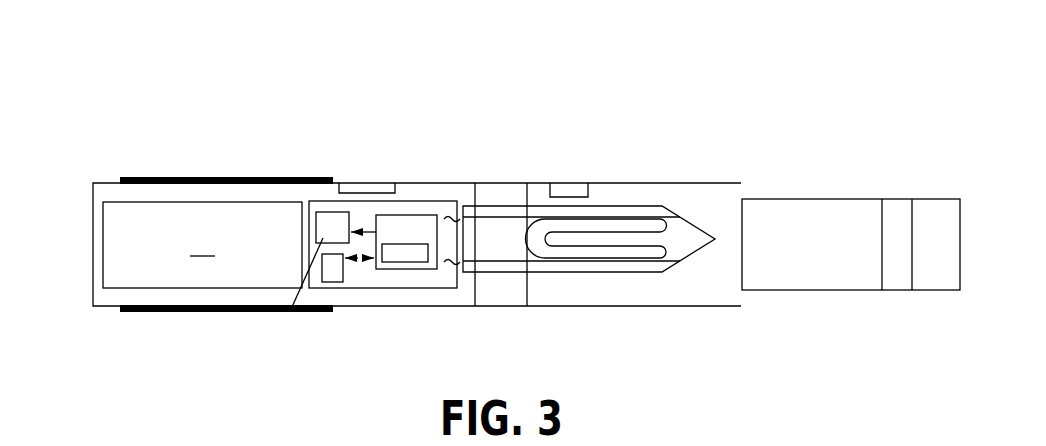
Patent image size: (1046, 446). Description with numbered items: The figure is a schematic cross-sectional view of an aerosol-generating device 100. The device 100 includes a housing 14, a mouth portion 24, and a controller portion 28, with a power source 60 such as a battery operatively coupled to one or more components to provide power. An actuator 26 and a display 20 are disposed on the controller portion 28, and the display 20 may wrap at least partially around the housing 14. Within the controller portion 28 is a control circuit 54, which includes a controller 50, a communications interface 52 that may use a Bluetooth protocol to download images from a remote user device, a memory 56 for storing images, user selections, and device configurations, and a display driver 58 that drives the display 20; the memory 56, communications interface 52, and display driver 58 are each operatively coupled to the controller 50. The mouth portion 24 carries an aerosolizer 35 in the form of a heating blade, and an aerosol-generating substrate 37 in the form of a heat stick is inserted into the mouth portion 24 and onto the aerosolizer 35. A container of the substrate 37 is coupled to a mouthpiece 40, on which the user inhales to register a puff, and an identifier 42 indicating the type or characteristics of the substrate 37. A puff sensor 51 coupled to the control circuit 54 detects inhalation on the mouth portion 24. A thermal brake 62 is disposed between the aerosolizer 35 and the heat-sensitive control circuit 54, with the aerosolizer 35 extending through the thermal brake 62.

The aerosol-generating device 100 is at (262, 86).
The housing 14 is at (107, 181).
The display 20 is at (195, 180).
The controller portion 28 is at (106, 309).
The power source 60 is at (202, 245).
The display driver 58 is at (328, 220).
The memory 56 is at (334, 277).
The control circuit 54 is at (402, 282).
The controller 50 is at (417, 230).
The communications interface 52 is at (390, 252).
The actuator 26 is at (375, 185).
The mouth portion 24 is at (718, 173).
The puff sensor 51 is at (572, 190).
The aerosolizer 35 is at (620, 205).
The thermal brake 62 is at (498, 293).
The aerosol-generating substrate 37 is at (835, 197).
The identifier 42 is at (894, 281).
The mouthpiece 40 is at (943, 281).